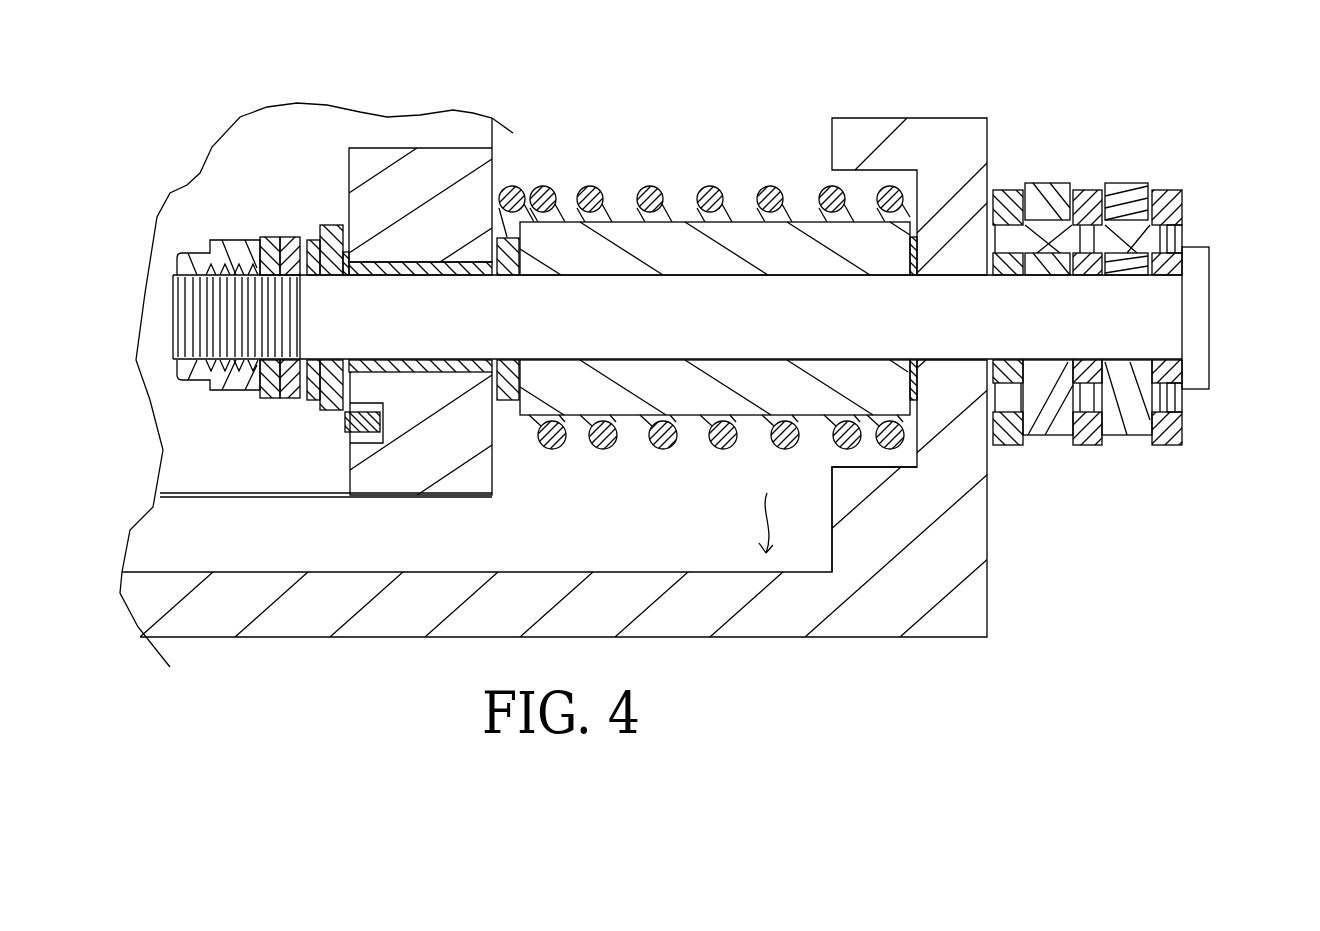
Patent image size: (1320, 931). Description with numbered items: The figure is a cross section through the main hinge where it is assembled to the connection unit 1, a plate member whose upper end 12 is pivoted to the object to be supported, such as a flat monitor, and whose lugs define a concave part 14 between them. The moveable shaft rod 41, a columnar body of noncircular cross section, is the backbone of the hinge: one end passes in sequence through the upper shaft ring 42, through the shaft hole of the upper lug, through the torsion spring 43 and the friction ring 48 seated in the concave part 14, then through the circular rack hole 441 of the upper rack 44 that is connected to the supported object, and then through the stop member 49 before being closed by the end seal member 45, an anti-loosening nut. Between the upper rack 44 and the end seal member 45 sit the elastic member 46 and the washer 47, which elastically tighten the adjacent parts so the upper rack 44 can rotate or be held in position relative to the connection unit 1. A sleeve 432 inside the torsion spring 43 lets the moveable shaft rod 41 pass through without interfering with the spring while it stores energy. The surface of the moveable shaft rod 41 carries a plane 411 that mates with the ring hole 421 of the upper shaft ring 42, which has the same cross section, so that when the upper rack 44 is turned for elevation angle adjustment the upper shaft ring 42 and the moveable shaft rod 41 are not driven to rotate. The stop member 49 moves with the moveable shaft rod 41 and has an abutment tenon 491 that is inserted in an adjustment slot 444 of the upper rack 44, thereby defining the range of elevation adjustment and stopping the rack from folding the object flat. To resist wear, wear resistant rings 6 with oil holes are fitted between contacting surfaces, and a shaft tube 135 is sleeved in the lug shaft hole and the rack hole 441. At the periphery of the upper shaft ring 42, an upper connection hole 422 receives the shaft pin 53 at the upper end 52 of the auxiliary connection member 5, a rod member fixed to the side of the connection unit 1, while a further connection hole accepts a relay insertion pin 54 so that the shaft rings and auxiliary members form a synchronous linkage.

The connection unit 1 is at (778, 618).
The upper end 12 is at (715, 572).
The concave part 14 is at (777, 507).
The shaft tube 135 is at (433, 267).
The moveable shaft rod 41 is at (1198, 290).
The plane 411 is at (1160, 330).
The ring hole 421 is at (1175, 370).
The upper connection hole 422 is at (1175, 232).
The upper shaft ring 42 is at (1010, 205).
The torsion spring 43 is at (650, 195).
The sleeve 432 is at (633, 397).
The upper rack 44 is at (468, 155).
The rack hole 441 is at (443, 377).
The adjustment slot 444 is at (385, 440).
The end seal member 45 is at (197, 380).
The elastic member 46 is at (298, 380).
The washer 47 is at (272, 392).
The friction ring 48 is at (528, 410).
The stop member 49 is at (328, 228).
The abutment tenon 491 is at (347, 423).
The auxiliary connection member 5 is at (1062, 185).
The upper end 52 is at (1048, 200).
The shaft pin 53 is at (1120, 227).
The relay insertion pin 54 is at (1058, 422).
The wear resistant ring 6 is at (372, 237).